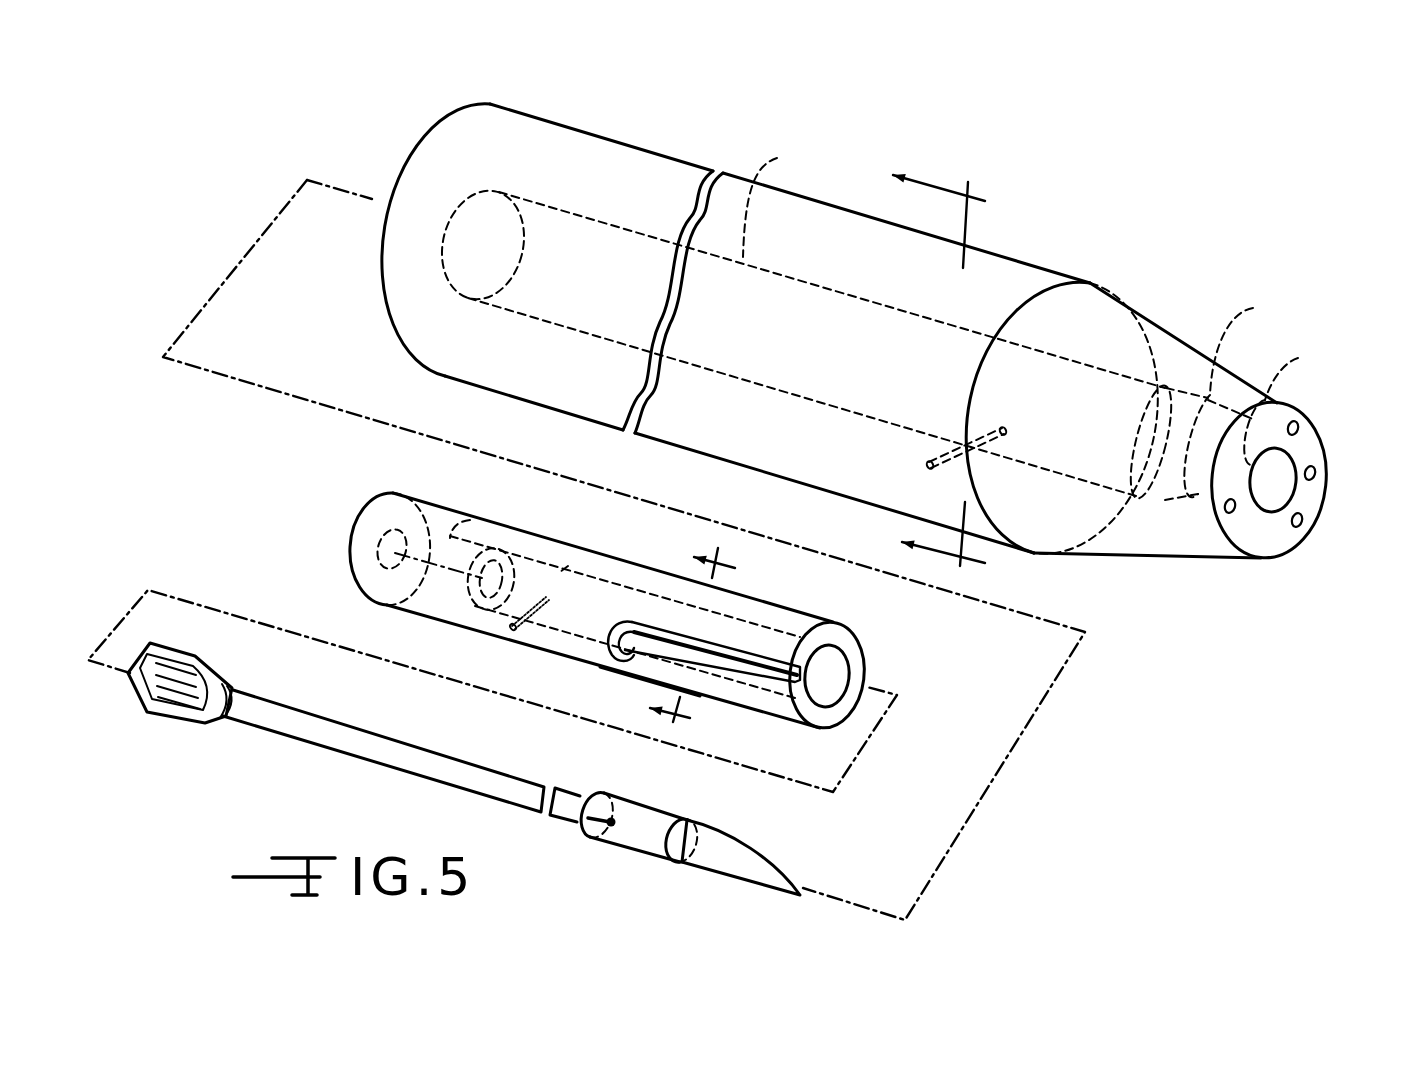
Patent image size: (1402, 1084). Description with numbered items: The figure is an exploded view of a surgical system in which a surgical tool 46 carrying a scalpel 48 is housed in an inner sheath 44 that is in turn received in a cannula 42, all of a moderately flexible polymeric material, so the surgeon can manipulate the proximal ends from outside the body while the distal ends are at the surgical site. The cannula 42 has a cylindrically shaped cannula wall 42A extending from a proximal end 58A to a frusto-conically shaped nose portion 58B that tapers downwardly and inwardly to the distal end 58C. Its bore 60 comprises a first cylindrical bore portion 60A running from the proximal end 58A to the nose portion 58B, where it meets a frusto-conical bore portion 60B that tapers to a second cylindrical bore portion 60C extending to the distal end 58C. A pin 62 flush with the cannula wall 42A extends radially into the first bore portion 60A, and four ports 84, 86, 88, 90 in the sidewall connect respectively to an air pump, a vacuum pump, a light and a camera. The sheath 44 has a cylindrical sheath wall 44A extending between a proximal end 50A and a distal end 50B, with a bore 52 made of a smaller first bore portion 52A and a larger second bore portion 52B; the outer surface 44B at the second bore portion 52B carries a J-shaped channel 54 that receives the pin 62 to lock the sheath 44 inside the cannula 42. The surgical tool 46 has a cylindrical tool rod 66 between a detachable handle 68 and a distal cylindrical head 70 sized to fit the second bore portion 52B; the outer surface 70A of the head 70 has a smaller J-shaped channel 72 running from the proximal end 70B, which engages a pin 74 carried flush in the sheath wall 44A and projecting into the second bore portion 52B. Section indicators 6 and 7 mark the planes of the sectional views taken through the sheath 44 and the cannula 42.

The cannula 42 is at (769, 352).
The cannula wall 42A is at (593, 130).
The inner sheath 44 is at (626, 629).
The sheath wall 44A is at (793, 620).
The outer surface of the sheath wall 44B is at (763, 717).
The surgical tool 46 is at (330, 739).
The scalpel 48 is at (725, 865).
The proximal end of the sheath 50A is at (385, 517).
The distal end of the sheath 50B is at (853, 647).
The sheath bore 52 is at (822, 688).
The first bore portion of the sheath 52A is at (484, 520).
The second bore portion of the sheath 52B is at (568, 566).
The J-shaped channel of the sheath 54 is at (728, 647).
The proximal end of the cannula 58A is at (453, 148).
The nose portion of the cannula 58B is at (1100, 313).
The distal end of the cannula 58C is at (1250, 530).
The cannula bore 60 is at (495, 245).
The first bore portion of the cannula 60A is at (789, 197).
The frusto-conically shaped bore portion 60B is at (1234, 395).
The second bore portion of the cannula 60C is at (1278, 405).
The pin 62 is at (977, 431).
The tool rod 66 is at (428, 757).
The handle 68 is at (168, 713).
The head 70 is at (668, 837).
The outer surface of the head 70A is at (650, 802).
The proximal end of the head 70B is at (597, 795).
The J-shaped channel of the head 72 is at (607, 835).
The pin 74 is at (545, 618).
The port 84 is at (1297, 423).
The port 86 is at (1316, 473).
The port 88 is at (1300, 530).
The port 90 is at (1228, 513).
The section line 6- 6 is at (699, 641).
The section line 7- 7 is at (926, 363).